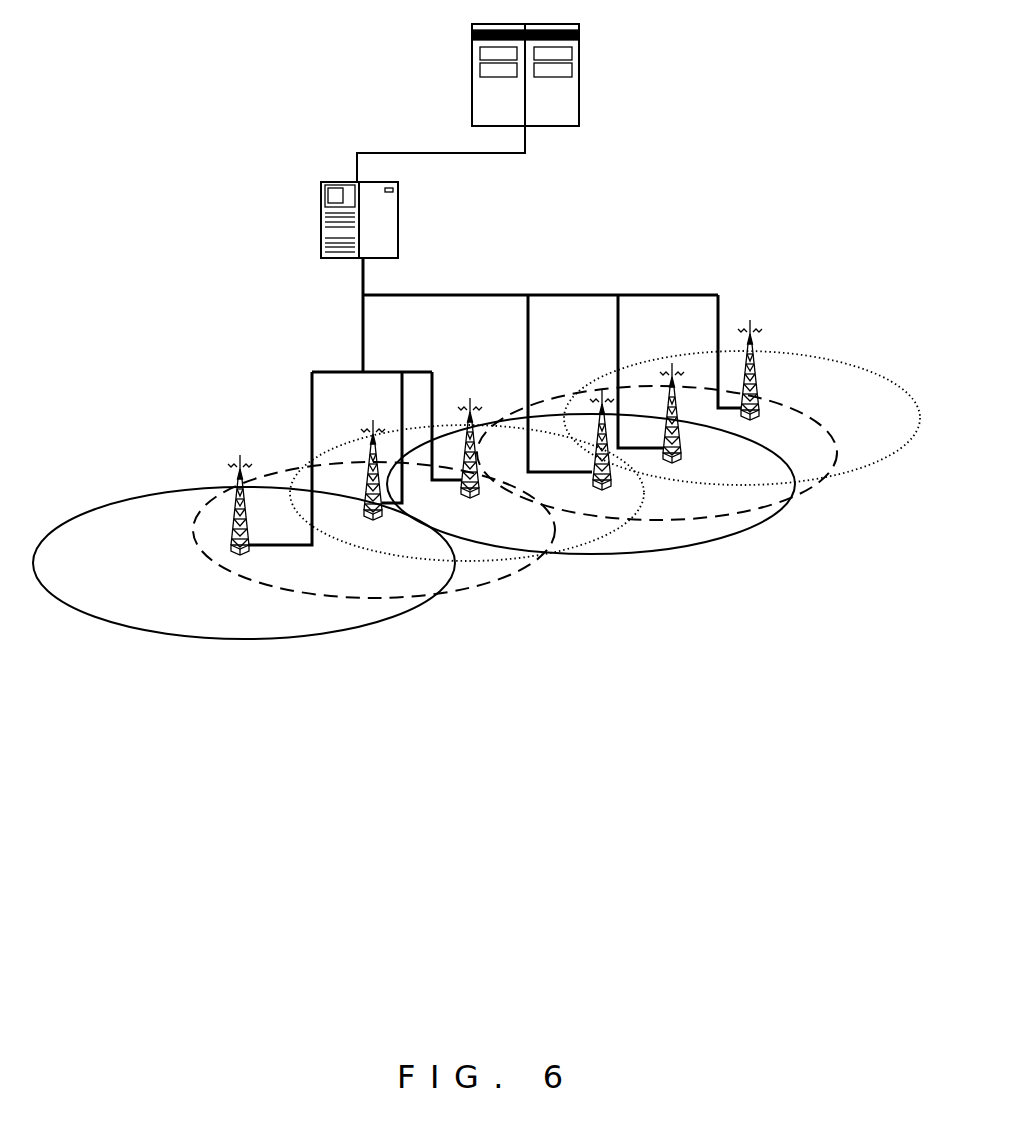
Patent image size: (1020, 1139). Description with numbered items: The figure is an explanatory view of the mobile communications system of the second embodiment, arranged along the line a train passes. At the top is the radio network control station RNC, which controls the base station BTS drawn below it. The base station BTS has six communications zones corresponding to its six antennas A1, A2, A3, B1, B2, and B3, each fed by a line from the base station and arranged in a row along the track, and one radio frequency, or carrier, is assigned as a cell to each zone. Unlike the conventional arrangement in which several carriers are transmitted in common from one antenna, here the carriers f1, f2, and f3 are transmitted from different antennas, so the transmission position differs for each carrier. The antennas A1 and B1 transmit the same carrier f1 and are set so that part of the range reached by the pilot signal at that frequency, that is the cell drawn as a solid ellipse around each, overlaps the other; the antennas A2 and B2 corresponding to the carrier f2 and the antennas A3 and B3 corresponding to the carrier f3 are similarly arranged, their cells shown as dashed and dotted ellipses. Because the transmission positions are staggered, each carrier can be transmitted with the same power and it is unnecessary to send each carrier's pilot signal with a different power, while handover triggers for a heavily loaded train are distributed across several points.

The radio network control station RNC is at (566, 77).
The base station BTS is at (403, 221).
The antenna A1 is at (216, 486).
The antenna A2 is at (359, 446).
The antenna A3 is at (473, 415).
The antenna B1 is at (577, 411).
The antenna B2 is at (675, 383).
The antenna B3 is at (783, 352).
The carrier f1 is at (492, 545).
The carrier f2 is at (670, 523).
The carrier f3 is at (717, 488).